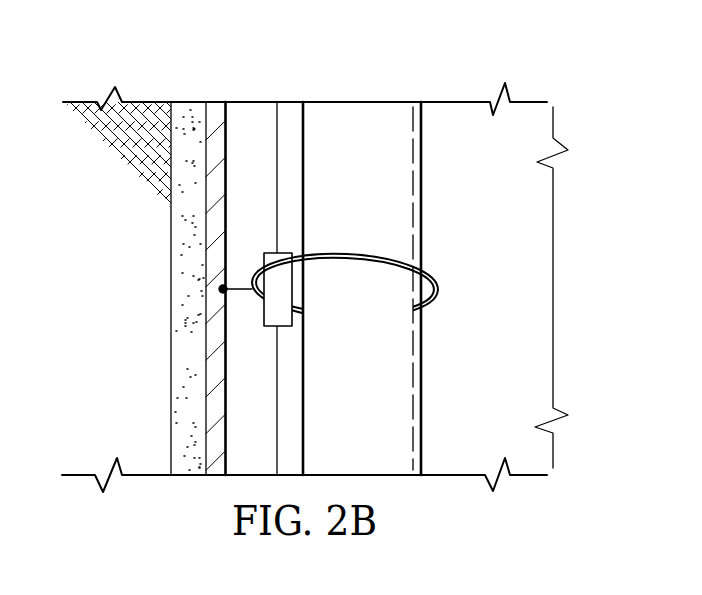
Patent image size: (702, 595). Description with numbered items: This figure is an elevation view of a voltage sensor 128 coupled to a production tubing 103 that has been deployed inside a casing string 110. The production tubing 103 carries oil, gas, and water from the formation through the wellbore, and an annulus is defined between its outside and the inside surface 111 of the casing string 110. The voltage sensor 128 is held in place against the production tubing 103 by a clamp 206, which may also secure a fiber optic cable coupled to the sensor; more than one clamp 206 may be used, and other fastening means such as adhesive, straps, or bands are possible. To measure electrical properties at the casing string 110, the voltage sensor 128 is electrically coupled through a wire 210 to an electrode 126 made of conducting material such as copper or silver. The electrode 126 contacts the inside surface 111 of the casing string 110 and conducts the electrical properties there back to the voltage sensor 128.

The production tubing 103 is at (413, 195).
The casing string 110 is at (218, 408).
The inside surface of casing string 111 is at (226, 142).
The electrode 126 is at (222, 289).
The voltage sensor 128 is at (293, 278).
The clamp 206 is at (350, 250).
The wire 210 is at (245, 283).